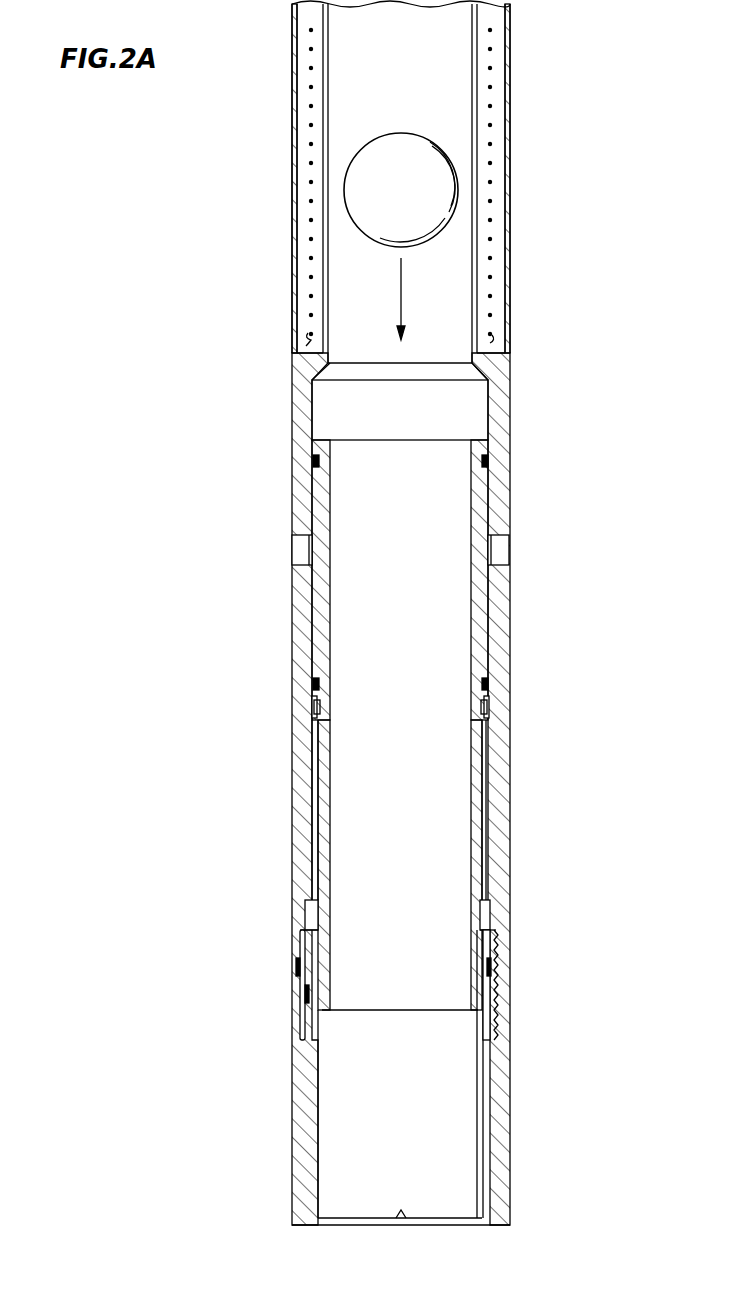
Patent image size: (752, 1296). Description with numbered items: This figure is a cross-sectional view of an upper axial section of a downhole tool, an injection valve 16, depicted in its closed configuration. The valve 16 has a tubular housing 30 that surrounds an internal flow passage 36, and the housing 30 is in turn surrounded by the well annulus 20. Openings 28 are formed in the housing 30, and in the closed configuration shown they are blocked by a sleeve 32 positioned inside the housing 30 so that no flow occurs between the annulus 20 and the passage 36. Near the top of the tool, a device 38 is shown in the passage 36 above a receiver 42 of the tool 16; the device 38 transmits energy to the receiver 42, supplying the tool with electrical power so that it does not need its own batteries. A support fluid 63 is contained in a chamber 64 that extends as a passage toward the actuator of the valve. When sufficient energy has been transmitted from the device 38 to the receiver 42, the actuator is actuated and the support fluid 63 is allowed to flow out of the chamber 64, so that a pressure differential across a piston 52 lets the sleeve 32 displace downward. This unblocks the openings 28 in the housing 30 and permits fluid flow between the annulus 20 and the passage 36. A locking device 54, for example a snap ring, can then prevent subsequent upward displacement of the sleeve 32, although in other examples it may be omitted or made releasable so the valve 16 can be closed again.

The injection valve 16 is at (603, 90).
The annulus 20 is at (191, 370).
The openings 28 is at (291, 548).
The housing 30 is at (292, 633).
The sleeve 32 is at (405, 440).
The passage 36 is at (420, 664).
The device 38 is at (401, 133).
The receiver 42 is at (490, 183).
The piston 52 is at (490, 685).
The locking device 54 is at (312, 707).
The support fluid 63 is at (490, 798).
The chamber 64 is at (490, 1083).